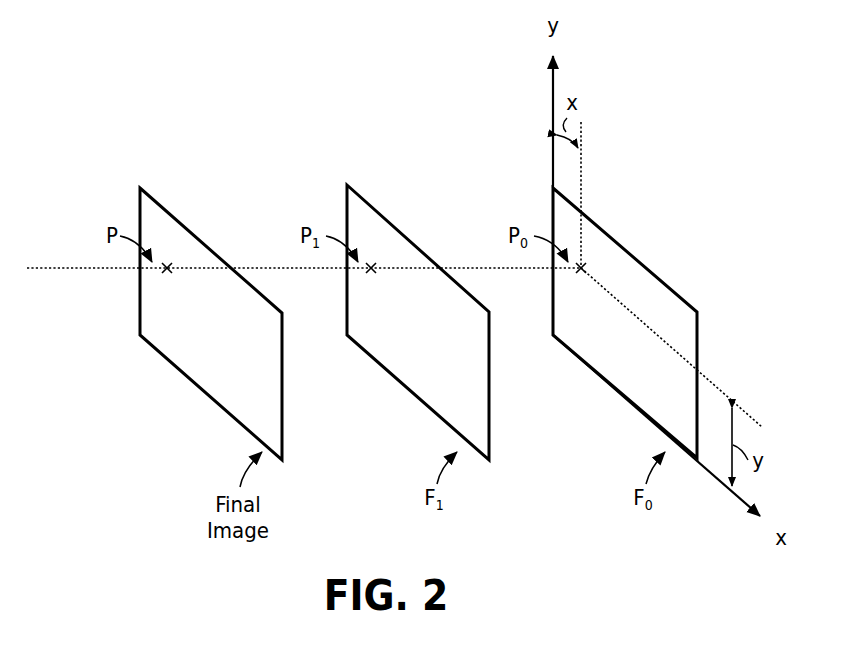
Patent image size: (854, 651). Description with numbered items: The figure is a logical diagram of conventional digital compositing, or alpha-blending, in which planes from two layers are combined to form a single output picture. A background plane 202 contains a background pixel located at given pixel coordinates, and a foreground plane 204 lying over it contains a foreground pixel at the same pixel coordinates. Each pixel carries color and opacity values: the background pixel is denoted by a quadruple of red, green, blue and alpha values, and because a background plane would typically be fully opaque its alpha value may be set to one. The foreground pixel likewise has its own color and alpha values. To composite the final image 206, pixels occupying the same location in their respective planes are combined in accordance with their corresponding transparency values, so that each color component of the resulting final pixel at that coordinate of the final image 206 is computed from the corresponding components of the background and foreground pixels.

The background plane 202 is at (680, 312).
The foreground plane 204 is at (357, 208).
The final image 206 is at (150, 208).